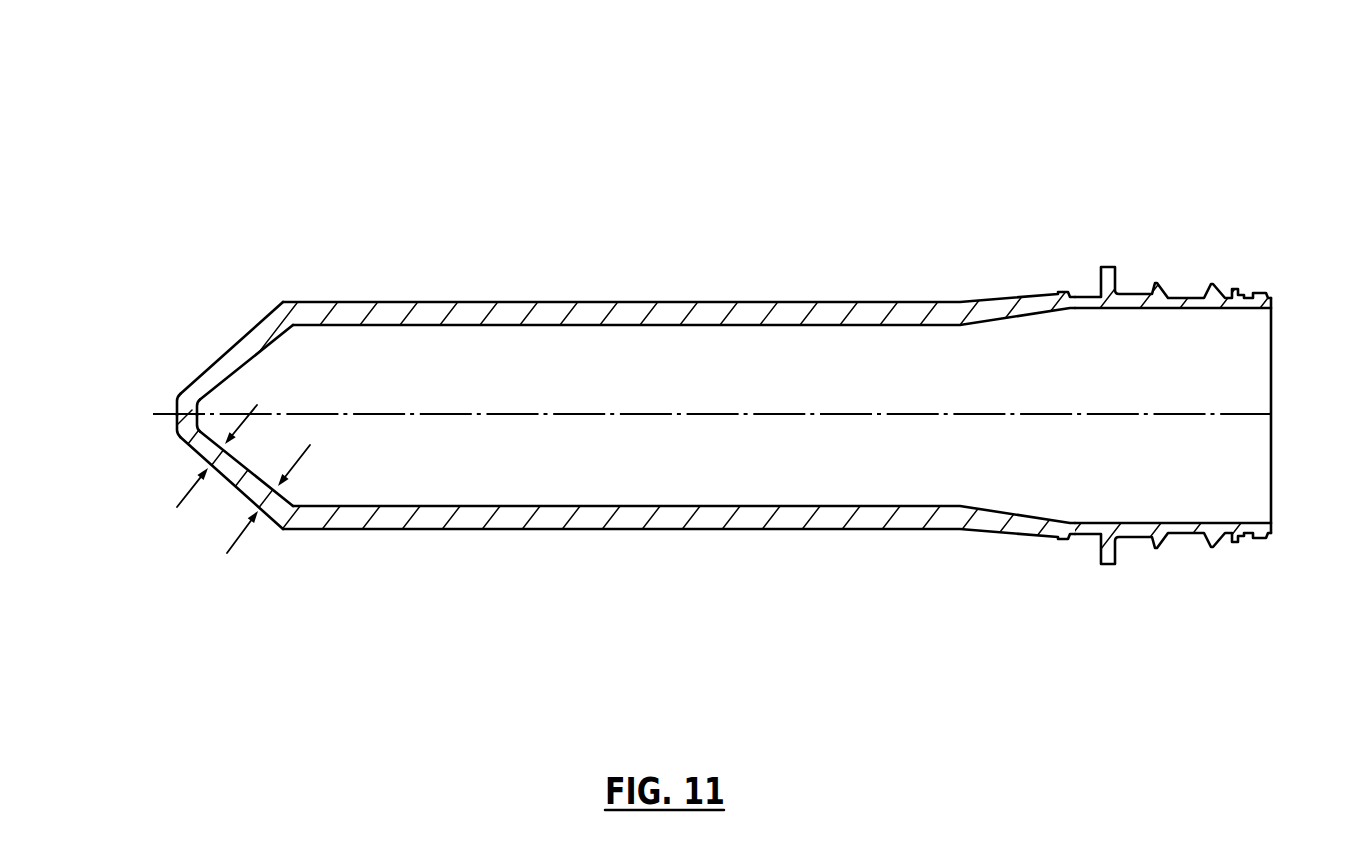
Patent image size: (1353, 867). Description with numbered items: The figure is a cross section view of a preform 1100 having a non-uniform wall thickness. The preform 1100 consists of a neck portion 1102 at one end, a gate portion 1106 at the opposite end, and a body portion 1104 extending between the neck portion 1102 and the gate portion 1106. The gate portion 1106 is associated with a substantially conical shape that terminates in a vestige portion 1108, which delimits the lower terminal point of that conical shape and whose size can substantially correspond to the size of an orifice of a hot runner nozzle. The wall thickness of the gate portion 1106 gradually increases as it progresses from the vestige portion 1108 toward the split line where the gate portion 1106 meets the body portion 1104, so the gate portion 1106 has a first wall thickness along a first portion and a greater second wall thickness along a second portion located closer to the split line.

The preform 1100 is at (710, 405).
The neck portion 1102 is at (1206, 608).
The body portion 1104 is at (697, 584).
The gate portion 1106 is at (115, 673).
The vestige portion 1108 is at (177, 405).